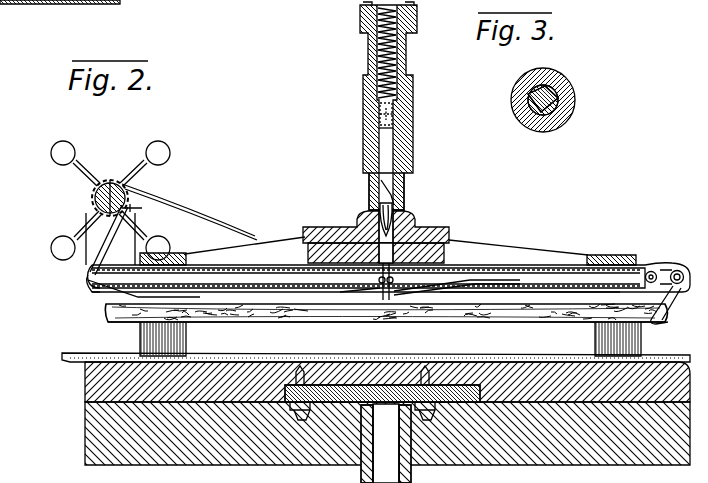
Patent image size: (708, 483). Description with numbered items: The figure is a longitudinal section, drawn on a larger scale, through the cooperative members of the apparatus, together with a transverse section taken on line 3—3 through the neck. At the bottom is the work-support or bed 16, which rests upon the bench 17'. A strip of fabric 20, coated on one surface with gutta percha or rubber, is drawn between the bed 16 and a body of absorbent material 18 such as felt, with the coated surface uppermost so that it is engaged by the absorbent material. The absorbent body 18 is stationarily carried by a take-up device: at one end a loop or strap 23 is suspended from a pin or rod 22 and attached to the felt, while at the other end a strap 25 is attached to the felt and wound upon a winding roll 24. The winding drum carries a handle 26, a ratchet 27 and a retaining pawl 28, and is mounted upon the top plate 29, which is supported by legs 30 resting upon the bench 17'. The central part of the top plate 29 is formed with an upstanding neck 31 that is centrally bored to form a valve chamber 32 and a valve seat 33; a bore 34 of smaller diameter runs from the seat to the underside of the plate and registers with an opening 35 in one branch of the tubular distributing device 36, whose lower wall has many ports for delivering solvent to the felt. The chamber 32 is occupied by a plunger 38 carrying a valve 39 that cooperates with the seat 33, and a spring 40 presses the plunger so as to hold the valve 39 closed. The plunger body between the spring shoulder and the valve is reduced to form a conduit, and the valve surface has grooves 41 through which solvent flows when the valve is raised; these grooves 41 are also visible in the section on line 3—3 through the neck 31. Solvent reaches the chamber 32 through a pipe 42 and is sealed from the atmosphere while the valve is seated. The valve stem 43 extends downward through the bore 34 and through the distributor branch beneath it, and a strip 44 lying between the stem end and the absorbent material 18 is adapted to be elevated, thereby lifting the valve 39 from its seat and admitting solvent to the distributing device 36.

In FIG. 2, the work-support or bed 16 is at (85, 378).
In FIG. 2, the bench 17' is at (360, 433).
In FIG. 2, the body of absorbent material 18 is at (386, 333).
In FIG. 2, the strip of fabric 20 is at (62, 356).
In FIG. 2, the pin or rod 22 is at (678, 270).
In FIG. 2, the loop or strap 23 is at (398, 311).
In FIG. 2, the winding roll 24 is at (92, 196).
In FIG. 2, the strap 25 is at (90, 283).
In FIG. 2, the handle 26 is at (122, 178).
In FIG. 2, the ratchet 27 is at (107, 175).
In FIG. 2, the retaining pawl 28 is at (201, 206).
In FIG. 2, the top plate 29 is at (176, 250).
In FIG. 2, the legs 30 is at (140, 333).
In FIG. 2, the upstanding neck 31 is at (414, 104).
In FIG. 3, the upstanding neck 31 is at (541, 132).
In FIG. 2, the valve chamber 32 is at (405, 182).
In FIG. 2, the valve seat 33 is at (308, 248).
In FIG. 2, the bore 34 is at (444, 250).
In FIG. 2, the opening 35 is at (342, 292).
In FIG. 2, the distributing device 36 is at (540, 273).
In FIG. 2, the plunger 38 is at (378, 108).
In FIG. 3, the plunger 38 is at (560, 84).
In FIG. 2, the valve 39 is at (395, 222).
In FIG. 2, the spring 40 is at (397, 42).
In FIG. 2, the grooves 41 is at (370, 190).
In FIG. 3, the grooves 41 is at (514, 99).
In FIG. 2, the pipe 42 is at (414, 131).
In FIG. 2, the valve stem 43 is at (382, 292).
In FIG. 2, the strip 44 is at (430, 287).
In FIG. 2, the section line 3— 3 is at (355, 218).